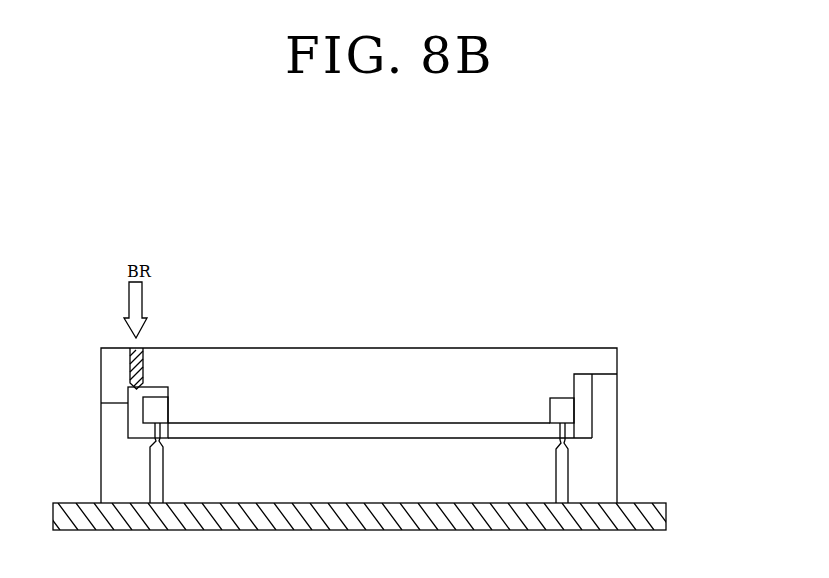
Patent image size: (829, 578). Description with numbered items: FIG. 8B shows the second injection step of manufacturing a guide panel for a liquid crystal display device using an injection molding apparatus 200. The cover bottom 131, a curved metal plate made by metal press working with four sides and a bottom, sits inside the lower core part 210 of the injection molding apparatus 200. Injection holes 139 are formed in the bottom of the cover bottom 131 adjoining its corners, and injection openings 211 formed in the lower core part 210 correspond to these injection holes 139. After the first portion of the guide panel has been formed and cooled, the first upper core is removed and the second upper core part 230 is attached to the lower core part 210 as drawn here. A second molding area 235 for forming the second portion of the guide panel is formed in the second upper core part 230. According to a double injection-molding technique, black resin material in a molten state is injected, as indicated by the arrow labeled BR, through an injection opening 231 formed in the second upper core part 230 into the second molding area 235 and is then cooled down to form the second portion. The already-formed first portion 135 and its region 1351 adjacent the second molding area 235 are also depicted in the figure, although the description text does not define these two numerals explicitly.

The injection molding apparatus 200 is at (658, 284).
The second upper core part 230 is at (603, 362).
The injection opening 231 is at (130, 365).
The second molding area 235 is at (155, 395).
The support block 1351 is at (160, 415).
The cover bottom 131 is at (339, 430).
The panel support member 135 is at (562, 410).
The injection holes 139 is at (567, 428).
The lower core part 210 is at (603, 436).
The injection openings 211 is at (565, 467).